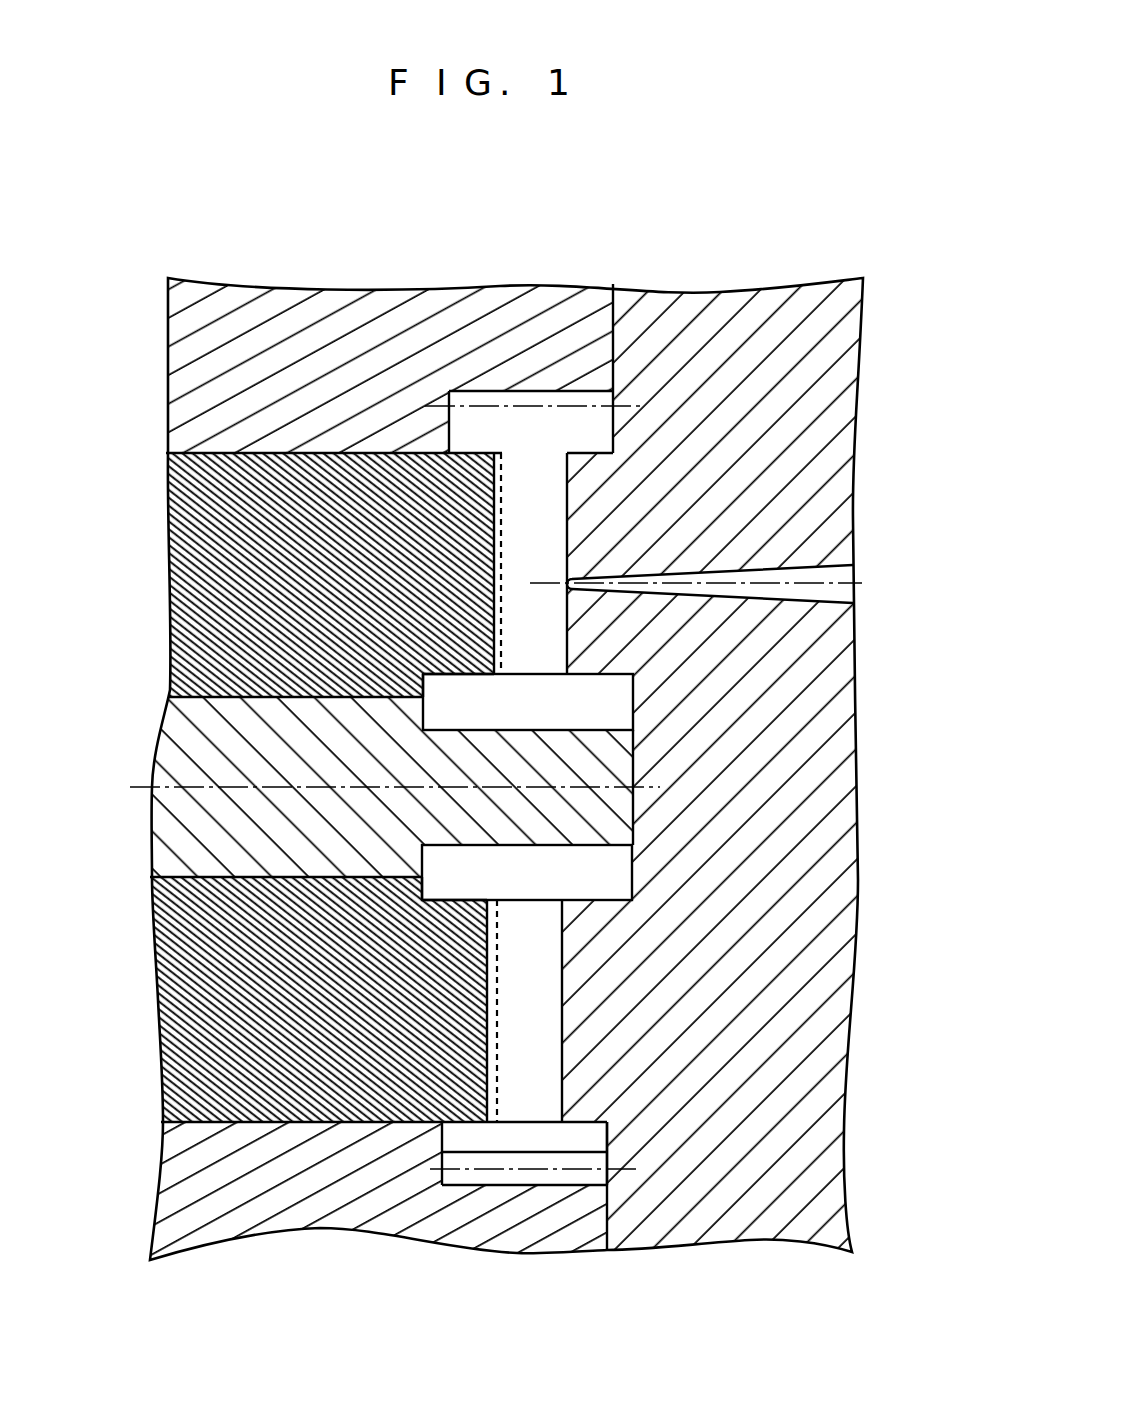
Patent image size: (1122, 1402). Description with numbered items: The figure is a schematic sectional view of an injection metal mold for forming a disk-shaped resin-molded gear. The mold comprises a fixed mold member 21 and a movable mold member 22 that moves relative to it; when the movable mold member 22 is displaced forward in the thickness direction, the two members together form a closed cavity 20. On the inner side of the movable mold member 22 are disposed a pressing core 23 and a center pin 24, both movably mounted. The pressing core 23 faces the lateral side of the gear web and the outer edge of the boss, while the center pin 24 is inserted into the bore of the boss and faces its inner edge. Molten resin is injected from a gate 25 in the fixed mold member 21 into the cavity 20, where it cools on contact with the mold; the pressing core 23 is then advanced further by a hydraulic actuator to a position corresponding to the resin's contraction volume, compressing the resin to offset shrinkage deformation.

The cavity 20 is at (483, 388).
The fixed mold member 21 is at (697, 522).
The movable mold member 22 is at (257, 362).
The pressing core 23 is at (260, 598).
The center pin 24 is at (290, 833).
The gate 25 is at (710, 592).